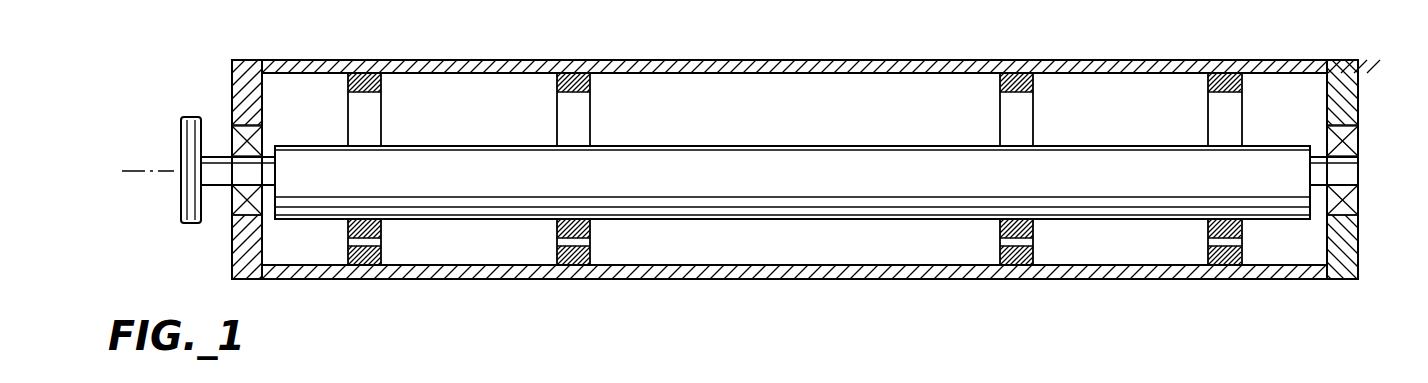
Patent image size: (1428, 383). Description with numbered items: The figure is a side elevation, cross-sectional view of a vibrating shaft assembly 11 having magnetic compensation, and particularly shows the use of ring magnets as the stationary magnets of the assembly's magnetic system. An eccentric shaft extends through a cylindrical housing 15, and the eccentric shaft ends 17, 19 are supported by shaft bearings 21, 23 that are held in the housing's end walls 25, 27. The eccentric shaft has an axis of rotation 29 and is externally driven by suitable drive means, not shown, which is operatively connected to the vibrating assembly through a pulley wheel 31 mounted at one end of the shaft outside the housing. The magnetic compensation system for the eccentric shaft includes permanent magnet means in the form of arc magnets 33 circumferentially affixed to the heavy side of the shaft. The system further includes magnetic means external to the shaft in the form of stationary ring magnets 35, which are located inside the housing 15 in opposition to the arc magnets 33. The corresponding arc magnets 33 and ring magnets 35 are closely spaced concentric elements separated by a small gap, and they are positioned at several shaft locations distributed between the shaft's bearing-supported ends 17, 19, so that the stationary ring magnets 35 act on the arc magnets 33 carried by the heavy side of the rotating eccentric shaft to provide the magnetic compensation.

The vibrating shaft assembly 11 is at (1347, 52).
The cylindrical housing 15 is at (1097, 60).
The eccentric shaft end 17 is at (222, 190).
The eccentric shaft end 19 is at (1350, 172).
The shaft bearing 21 is at (232, 133).
The shaft bearing 23 is at (1358, 143).
The end wall 25 is at (232, 80).
The end wall 27 is at (1358, 97).
The axis of rotation 29 is at (158, 172).
The pulley wheel 31 is at (182, 145).
The arc magnets 33 is at (384, 224).
The stationary ring magnets 35 is at (384, 82).